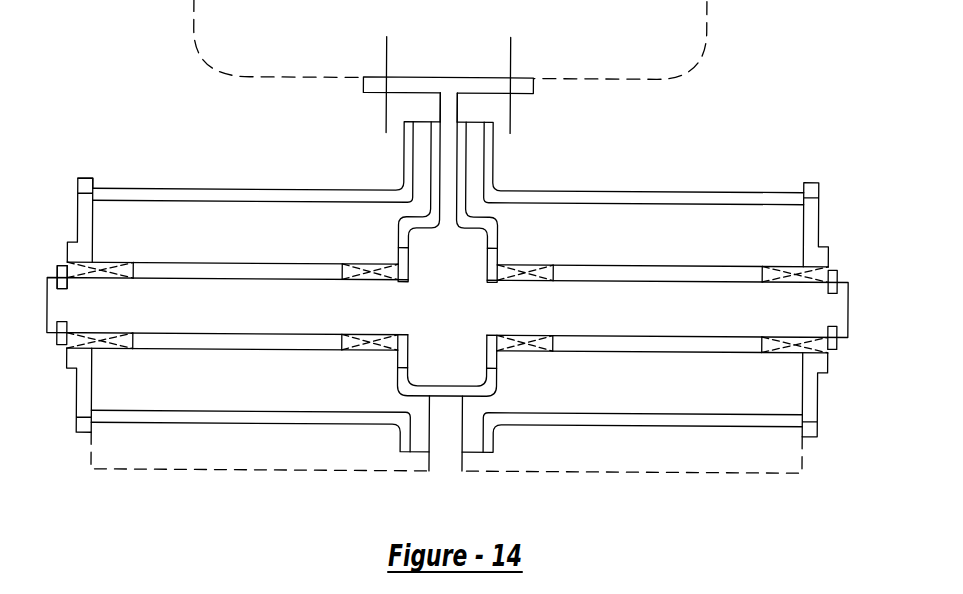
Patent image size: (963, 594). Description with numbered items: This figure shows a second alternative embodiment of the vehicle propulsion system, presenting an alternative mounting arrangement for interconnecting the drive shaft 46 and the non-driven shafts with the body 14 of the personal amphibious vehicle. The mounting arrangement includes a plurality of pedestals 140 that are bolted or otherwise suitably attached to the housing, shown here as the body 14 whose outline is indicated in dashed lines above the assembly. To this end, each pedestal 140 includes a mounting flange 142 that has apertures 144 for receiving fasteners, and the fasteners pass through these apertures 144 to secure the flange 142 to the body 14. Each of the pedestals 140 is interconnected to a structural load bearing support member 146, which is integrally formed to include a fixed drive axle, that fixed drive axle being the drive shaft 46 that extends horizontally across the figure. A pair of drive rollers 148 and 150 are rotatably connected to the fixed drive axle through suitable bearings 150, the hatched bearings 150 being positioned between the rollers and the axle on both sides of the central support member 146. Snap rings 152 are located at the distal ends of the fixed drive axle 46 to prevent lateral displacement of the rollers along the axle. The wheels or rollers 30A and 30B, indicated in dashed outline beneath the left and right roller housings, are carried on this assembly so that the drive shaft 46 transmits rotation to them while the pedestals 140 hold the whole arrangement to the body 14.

The body 14 is at (693, 55).
The first wheel 30A is at (170, 470).
The second wheel 30B is at (803, 471).
The drive shaft 46 is at (677, 325).
The pedestal 140 is at (362, 96).
The mounting flange 142 is at (523, 96).
The apertures 144 is at (512, 65).
The structural load bearing support member 146 is at (418, 393).
The drive roller 148 is at (803, 232).
The bearings 150 is at (87, 213).
The snap rings 152 is at (60, 268).